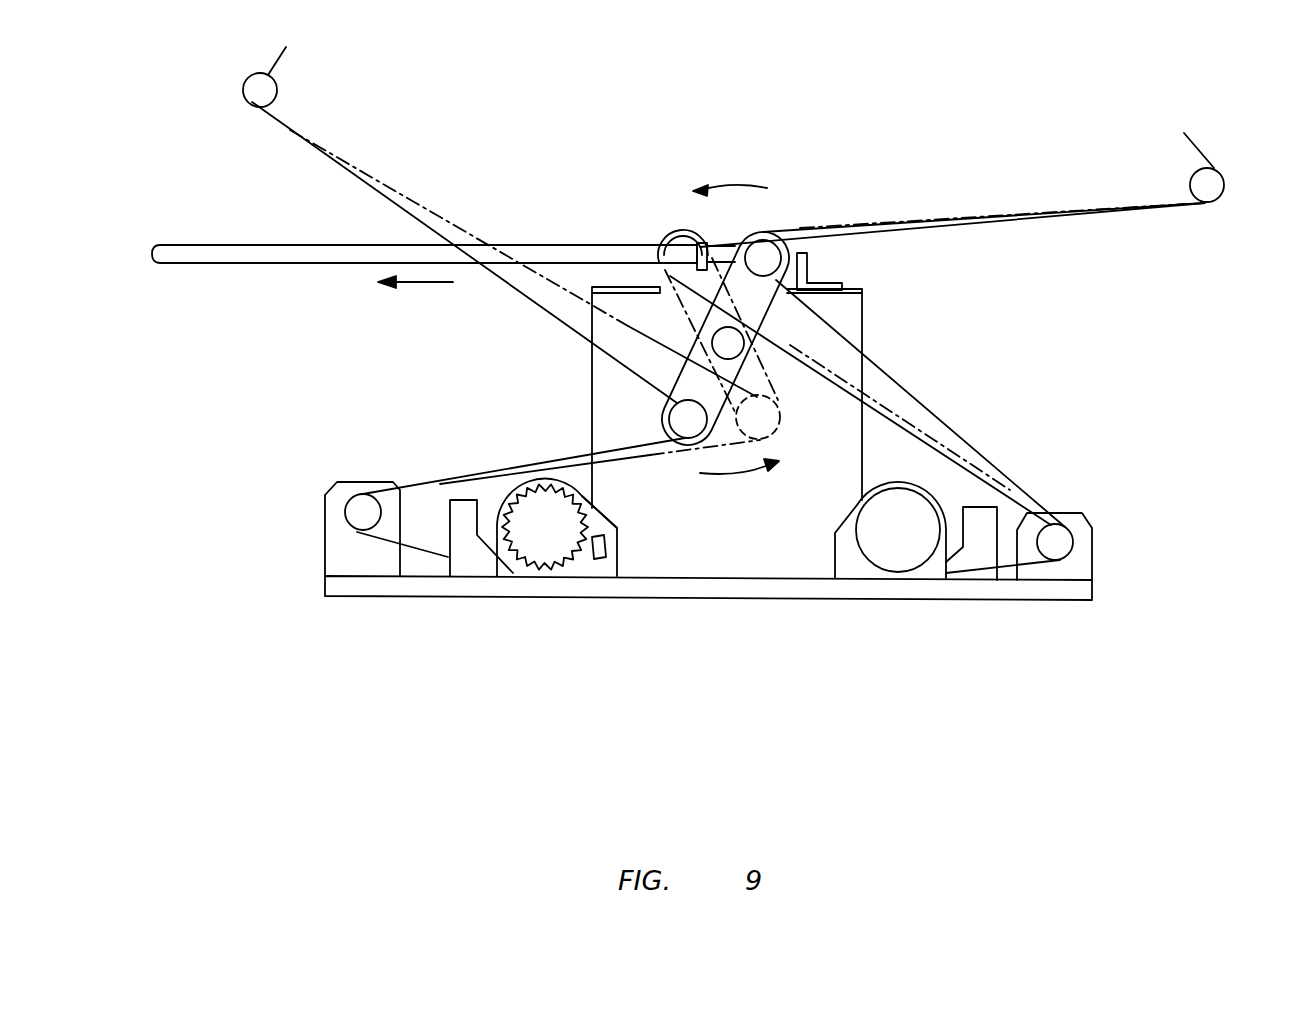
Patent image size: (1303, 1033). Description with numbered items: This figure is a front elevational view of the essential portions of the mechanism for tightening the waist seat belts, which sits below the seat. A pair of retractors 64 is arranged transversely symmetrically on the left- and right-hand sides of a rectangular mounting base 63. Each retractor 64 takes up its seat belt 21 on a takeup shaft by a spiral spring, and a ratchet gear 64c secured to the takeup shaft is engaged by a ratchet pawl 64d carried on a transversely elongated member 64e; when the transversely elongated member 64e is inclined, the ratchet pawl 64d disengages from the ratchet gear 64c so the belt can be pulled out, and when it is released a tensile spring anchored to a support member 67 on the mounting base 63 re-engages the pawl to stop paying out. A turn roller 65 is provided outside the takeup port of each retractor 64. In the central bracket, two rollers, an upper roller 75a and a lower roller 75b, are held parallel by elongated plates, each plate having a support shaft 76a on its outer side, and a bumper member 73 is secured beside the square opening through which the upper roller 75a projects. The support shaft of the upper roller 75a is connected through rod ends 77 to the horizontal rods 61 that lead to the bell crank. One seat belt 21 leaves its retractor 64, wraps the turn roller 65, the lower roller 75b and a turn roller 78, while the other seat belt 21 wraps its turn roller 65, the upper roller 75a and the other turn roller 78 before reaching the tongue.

The seat belt 21 is at (443, 233).
The horizontal rod 61 is at (297, 250).
The mounting base 63 is at (766, 588).
The retractor 64 is at (576, 568).
The ratchet gear 64c is at (541, 543).
The ratchet pawl 64d is at (601, 516).
The transversely elongated member 64e is at (606, 548).
The turn roller 65 is at (362, 502).
The support member 67 is at (467, 548).
The bumper member 73 is at (808, 264).
The upper roller 75a is at (767, 255).
The lower roller 75b is at (670, 419).
The support shaft 76a is at (741, 349).
The rod end 77 is at (731, 250).
The turn roller 78 is at (252, 97).